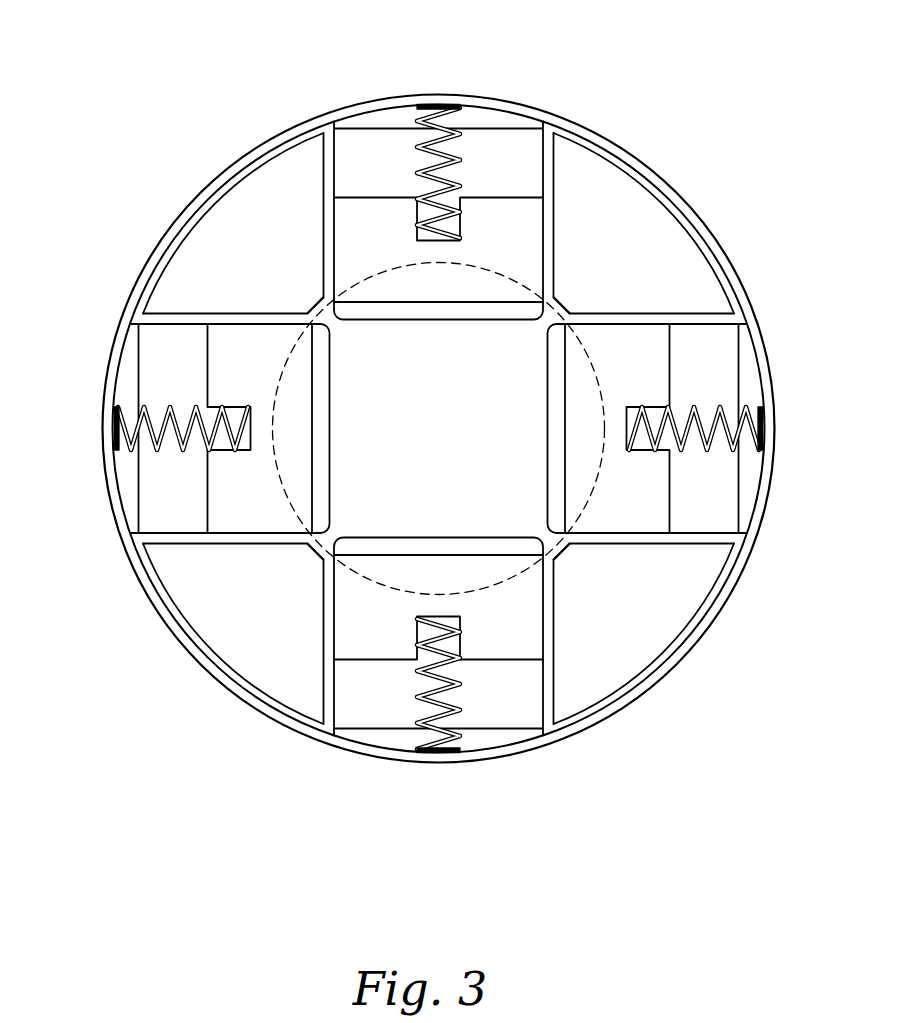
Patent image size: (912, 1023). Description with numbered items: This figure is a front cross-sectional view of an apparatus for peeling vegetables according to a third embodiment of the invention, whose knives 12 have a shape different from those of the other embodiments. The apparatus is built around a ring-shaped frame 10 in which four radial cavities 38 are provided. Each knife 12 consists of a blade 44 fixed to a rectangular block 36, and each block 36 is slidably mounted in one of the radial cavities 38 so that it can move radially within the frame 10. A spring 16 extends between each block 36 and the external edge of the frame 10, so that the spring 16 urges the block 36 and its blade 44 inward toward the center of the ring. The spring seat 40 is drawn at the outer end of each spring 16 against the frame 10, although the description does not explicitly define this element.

The ring-shaped frame 10 is at (658, 160).
The knife 12 is at (322, 242).
The spring 16 is at (462, 122).
The rectangular block 36 is at (367, 196).
The radial cavity 38 is at (513, 145).
The spring seat 40 is at (394, 95).
The blade 44 is at (375, 328).